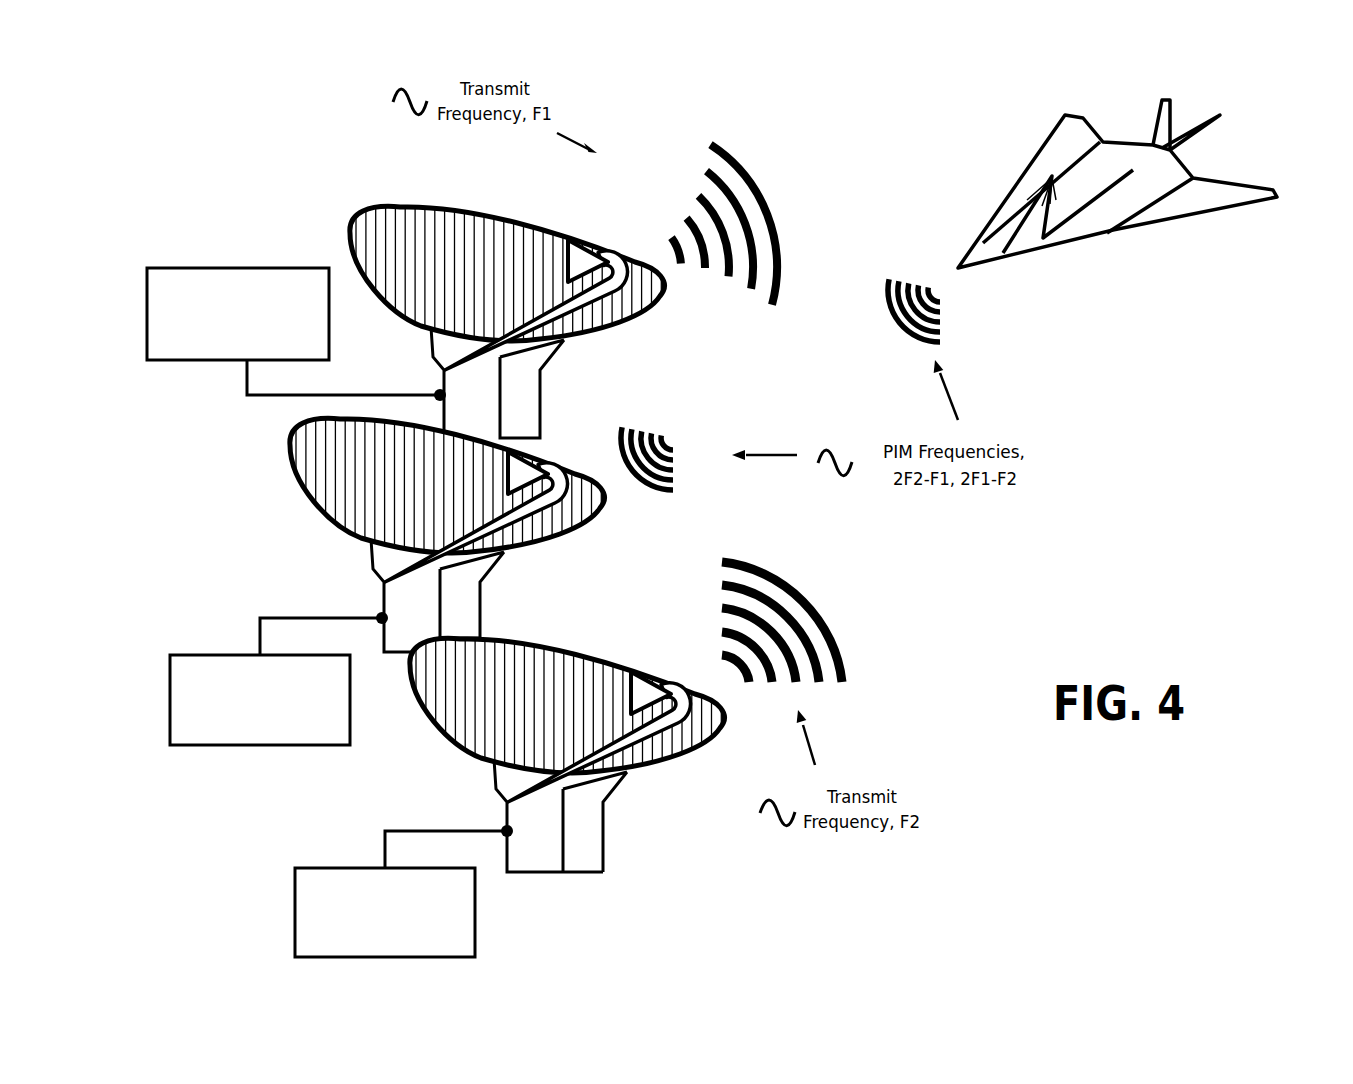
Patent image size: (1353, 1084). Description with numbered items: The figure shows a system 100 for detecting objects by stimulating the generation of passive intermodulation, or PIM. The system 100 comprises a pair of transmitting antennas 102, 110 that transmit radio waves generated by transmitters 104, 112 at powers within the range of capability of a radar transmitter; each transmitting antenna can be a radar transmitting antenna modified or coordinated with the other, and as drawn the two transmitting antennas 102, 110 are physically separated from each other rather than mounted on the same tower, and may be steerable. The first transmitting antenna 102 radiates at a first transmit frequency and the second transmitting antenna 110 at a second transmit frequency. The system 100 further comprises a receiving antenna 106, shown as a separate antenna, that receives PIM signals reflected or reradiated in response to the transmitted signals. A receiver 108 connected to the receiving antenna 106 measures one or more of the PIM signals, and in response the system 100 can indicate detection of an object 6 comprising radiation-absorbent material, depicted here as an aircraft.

The system 100 is at (190, 208).
The transmitting antenna 102 is at (398, 360).
The transmitter 104 is at (293, 331).
The receiving antenna 106 is at (323, 597).
The receiver 108 is at (276, 681).
The transmitting antenna 110 is at (450, 788).
The transmitter 112 is at (401, 894).
The object 6 is at (999, 104).